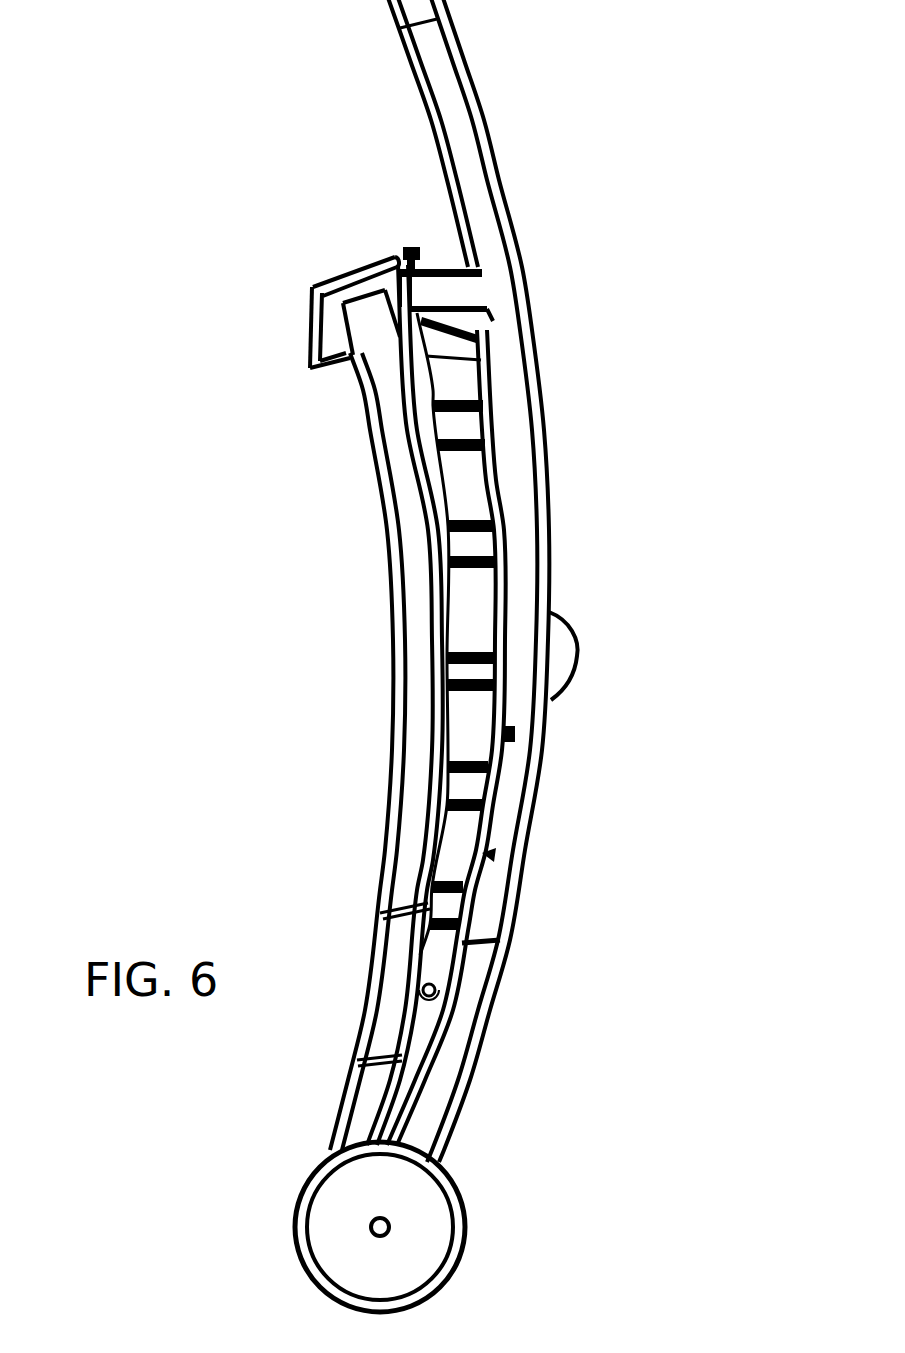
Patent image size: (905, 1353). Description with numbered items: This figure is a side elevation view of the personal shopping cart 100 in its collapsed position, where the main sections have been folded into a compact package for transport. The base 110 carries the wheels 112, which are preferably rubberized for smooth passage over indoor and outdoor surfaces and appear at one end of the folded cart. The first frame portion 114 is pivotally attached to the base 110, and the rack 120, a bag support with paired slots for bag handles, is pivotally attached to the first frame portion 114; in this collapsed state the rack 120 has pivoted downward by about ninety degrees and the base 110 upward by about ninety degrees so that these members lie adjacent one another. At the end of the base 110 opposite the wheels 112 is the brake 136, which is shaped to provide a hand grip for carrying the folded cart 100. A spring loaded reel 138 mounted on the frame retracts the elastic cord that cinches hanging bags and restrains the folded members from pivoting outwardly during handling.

The personal shopping cart 100 is at (78, 758).
The base 110 is at (392, 699).
The wheels 112 is at (456, 1203).
The first frame portion 114 is at (553, 530).
The rack 120 is at (487, 855).
The brake 136 is at (355, 270).
The spring loaded reel 138 is at (571, 630).